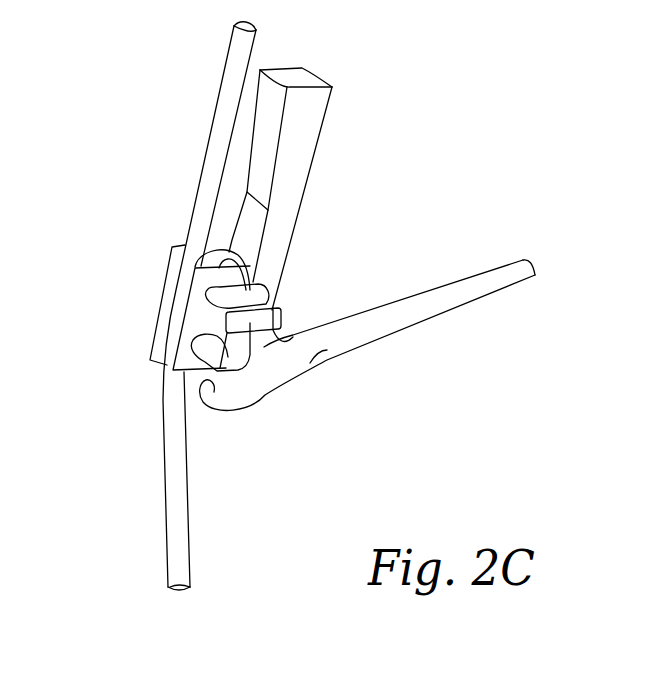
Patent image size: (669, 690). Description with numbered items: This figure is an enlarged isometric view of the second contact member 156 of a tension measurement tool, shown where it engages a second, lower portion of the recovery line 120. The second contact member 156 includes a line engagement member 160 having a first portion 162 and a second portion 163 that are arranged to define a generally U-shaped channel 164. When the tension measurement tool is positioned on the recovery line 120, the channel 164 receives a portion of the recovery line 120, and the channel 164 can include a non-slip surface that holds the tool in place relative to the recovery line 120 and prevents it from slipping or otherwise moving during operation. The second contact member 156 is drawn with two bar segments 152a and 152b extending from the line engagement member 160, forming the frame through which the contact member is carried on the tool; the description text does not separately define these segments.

The recovery line 120 is at (209, 140).
The first frame bar 152a is at (265, 120).
The second frame bar 152b is at (433, 313).
The second contact member 156 is at (371, 271).
The line engagement member 160 is at (145, 364).
The first portion 162 is at (160, 333).
The second portion 163 is at (207, 392).
The U-shaped channel 164 is at (152, 374).